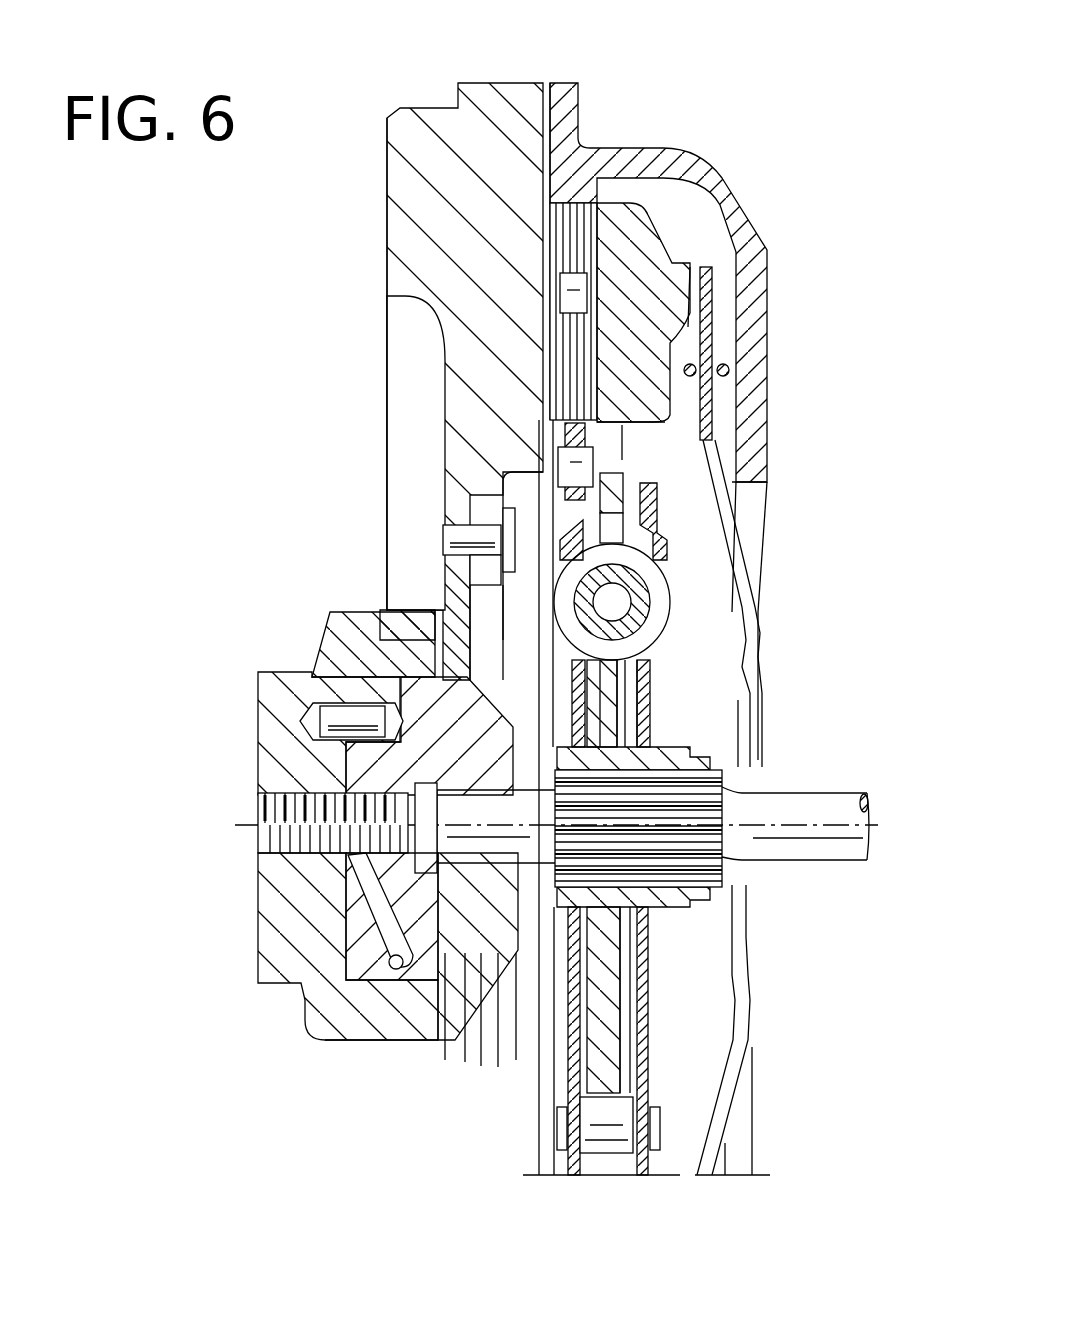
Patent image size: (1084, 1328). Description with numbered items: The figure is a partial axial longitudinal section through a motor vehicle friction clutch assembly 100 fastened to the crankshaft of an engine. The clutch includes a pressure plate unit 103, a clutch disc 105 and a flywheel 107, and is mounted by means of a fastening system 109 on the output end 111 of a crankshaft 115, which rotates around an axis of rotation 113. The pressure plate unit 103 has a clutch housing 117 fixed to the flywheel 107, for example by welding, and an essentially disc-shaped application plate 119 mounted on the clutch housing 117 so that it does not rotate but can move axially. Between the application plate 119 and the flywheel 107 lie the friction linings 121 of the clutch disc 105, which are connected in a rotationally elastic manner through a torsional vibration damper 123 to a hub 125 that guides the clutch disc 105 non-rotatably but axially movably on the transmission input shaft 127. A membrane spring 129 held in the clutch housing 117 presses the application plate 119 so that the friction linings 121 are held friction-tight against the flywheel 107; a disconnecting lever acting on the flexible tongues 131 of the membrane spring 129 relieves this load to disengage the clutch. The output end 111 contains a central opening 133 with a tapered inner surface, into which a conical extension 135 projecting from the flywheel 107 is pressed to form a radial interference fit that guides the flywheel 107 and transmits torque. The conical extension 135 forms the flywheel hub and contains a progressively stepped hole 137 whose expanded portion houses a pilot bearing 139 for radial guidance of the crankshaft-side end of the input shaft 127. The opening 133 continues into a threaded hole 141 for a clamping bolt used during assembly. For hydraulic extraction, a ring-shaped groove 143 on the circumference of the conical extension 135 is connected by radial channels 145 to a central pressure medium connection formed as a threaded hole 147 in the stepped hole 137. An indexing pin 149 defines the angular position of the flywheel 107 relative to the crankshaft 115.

The clutch assembly 100 is at (832, 285).
The pressure plate unit 103 is at (673, 140).
The clutch disc 105 is at (594, 195).
The flywheel 107 is at (410, 95).
The fastening system 109 is at (372, 596).
The output end 111 is at (347, 630).
The axis of rotation 113 is at (235, 827).
The crankshaft 115 is at (270, 693).
The clutch housing 117 is at (767, 237).
The application plate 119 is at (655, 253).
The friction linings 121 is at (547, 240).
The torsional vibration damper 123 is at (680, 603).
The hub 125 is at (687, 747).
The input shaft 127 is at (812, 808).
The membrane spring 129 is at (710, 333).
The flexible tongues 131 is at (750, 633).
The central opening 133 is at (345, 968).
The conical extension 135 is at (421, 930).
The stepped hole 137 is at (463, 1050).
The pilot bearing 139 is at (485, 1063).
The threaded hole 141 is at (290, 793).
The ring-shaped groove 143 is at (342, 1043).
The radial channels 145 is at (367, 905).
The threaded hole 147 is at (335, 767).
The indexing pin 149 is at (322, 672).